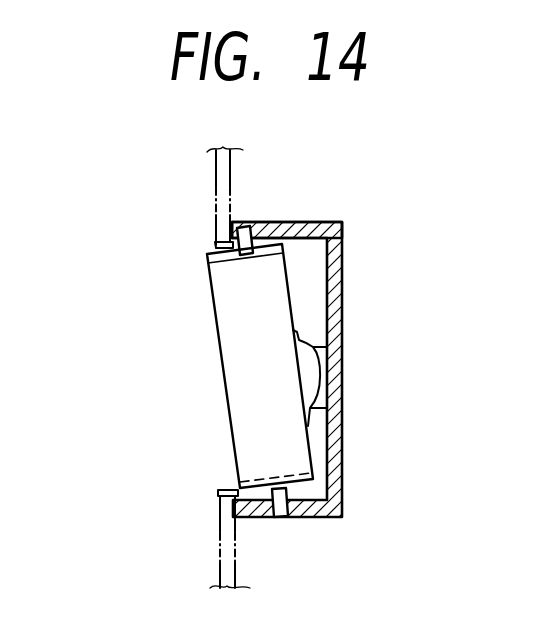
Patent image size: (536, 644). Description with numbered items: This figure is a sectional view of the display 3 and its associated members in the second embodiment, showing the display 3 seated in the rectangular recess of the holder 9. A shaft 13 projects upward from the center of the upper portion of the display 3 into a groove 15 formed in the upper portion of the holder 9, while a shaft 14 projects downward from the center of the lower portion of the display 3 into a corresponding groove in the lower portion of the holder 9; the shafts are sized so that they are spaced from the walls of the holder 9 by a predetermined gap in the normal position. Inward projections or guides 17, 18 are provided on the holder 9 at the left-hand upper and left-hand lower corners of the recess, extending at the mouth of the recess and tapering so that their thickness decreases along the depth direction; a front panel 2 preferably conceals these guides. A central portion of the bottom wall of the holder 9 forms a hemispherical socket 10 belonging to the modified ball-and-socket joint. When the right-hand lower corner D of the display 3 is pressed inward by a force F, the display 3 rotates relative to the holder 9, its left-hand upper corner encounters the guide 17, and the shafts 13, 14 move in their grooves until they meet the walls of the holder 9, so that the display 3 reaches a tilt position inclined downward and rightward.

The front panel 2 is at (215, 170).
The display 3 is at (228, 340).
The holder 9 is at (337, 318).
The hemispherical socket 10 is at (257, 515).
The shaft 13 is at (245, 227).
The shaft 14 is at (285, 513).
The groove 15 is at (272, 230).
The guide 17 is at (218, 243).
The guide 18 is at (222, 492).
The right-hand lower corner D is at (237, 470).
The force F is at (237, 471).